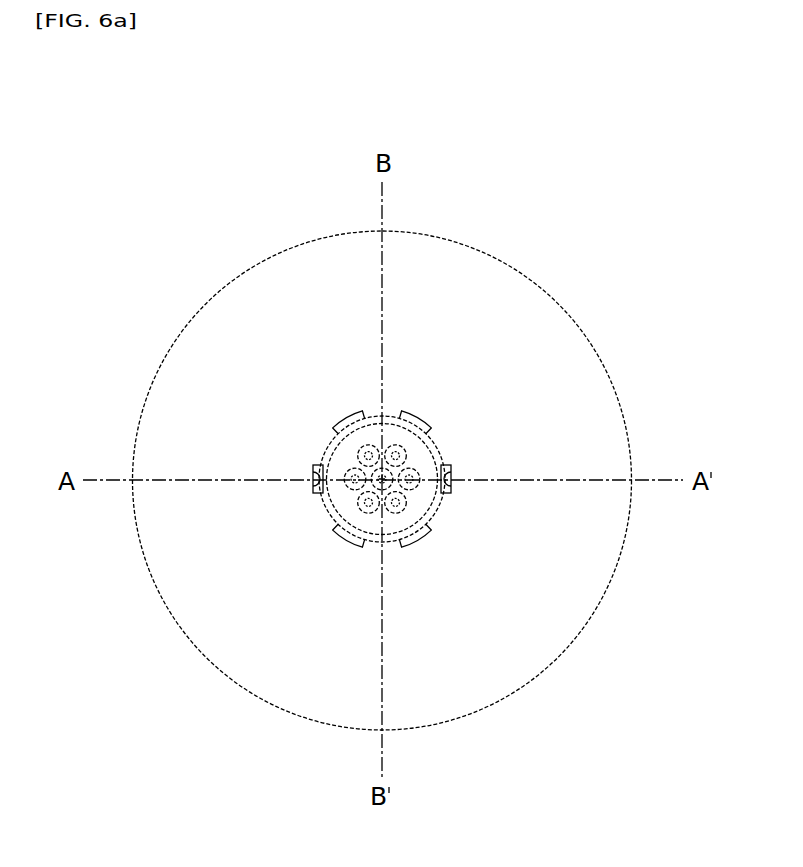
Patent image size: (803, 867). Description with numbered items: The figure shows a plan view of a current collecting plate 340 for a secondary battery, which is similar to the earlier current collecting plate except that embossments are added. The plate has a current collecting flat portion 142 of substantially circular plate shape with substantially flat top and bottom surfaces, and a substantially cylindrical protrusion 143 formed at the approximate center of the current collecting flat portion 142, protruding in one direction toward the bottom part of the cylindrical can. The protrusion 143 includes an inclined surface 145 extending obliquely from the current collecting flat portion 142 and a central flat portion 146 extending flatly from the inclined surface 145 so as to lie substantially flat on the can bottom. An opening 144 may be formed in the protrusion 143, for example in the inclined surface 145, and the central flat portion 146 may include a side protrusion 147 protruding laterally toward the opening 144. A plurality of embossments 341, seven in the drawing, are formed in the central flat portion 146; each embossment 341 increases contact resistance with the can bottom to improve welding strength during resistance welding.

The current collecting plate 340 is at (533, 240).
The embossments 341 is at (396, 455).
The current collecting flat portion 142 is at (598, 418).
The protrusion 143 is at (330, 443).
The opening 144 is at (417, 540).
The inclined surface 145 is at (435, 437).
The central flat portion 146 is at (412, 500).
The side protrusion 147 is at (355, 532).